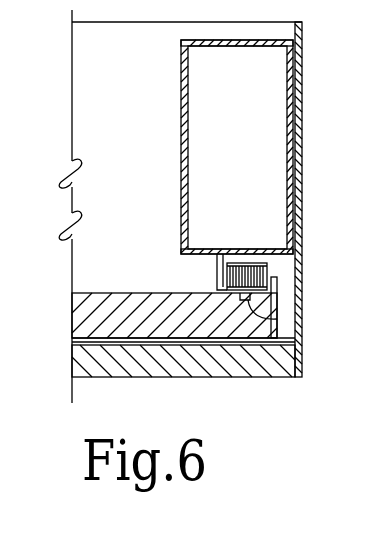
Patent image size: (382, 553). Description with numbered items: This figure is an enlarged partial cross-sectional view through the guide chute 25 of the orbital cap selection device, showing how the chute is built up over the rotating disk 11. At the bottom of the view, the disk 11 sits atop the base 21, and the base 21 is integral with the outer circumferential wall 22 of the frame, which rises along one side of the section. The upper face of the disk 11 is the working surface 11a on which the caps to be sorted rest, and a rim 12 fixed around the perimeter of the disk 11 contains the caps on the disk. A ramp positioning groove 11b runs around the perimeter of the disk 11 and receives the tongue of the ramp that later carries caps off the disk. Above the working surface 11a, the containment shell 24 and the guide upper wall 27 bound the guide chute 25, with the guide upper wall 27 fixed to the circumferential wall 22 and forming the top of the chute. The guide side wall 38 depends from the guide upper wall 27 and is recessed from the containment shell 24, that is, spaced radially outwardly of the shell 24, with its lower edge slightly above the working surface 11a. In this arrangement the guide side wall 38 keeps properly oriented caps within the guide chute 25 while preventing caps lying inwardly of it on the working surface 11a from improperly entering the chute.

The outer circumferential wall 22 is at (303, 80).
The containment shell 24 is at (181, 85).
The guide chute 25 is at (249, 40).
The guide upper wall 27 is at (245, 250).
The guide side wall 38 is at (217, 281).
The rim 12 is at (277, 277).
The working surface 11a is at (82, 293).
The ramp positioning groove 11b is at (262, 318).
The disk 11 is at (264, 323).
The base 21 is at (248, 361).